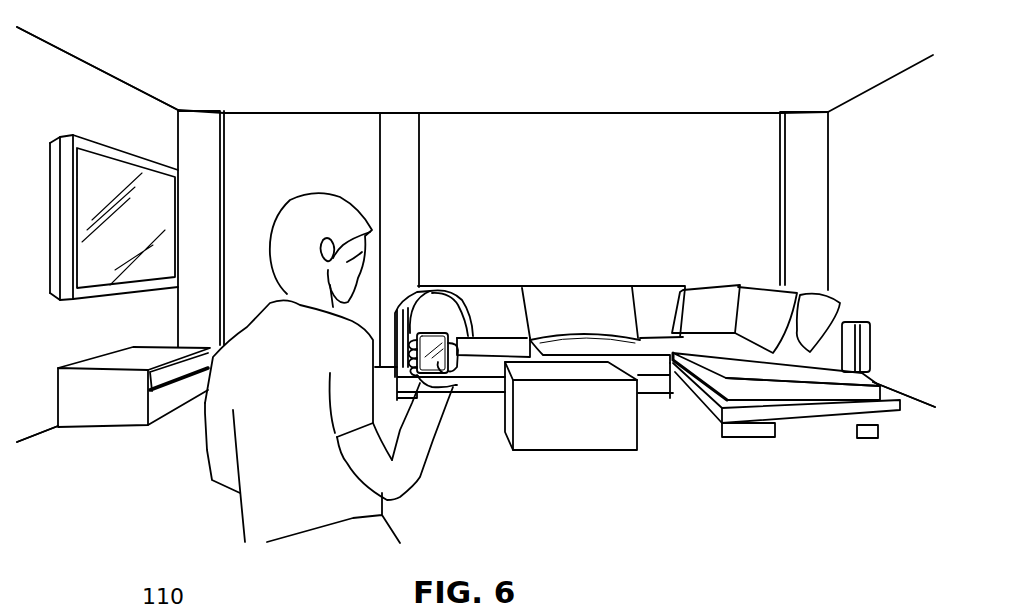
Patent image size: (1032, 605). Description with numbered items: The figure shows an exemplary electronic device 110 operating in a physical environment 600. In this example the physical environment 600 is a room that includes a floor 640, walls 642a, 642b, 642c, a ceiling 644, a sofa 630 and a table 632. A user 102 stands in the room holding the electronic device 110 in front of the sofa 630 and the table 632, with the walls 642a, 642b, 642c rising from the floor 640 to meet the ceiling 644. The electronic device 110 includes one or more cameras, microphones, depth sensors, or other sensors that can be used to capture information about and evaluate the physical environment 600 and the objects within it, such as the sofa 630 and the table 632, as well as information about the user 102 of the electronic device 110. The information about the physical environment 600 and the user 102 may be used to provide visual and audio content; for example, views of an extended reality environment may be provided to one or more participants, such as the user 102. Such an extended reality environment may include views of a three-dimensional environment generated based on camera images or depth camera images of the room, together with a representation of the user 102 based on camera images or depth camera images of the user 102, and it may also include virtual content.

The physical environment 600 is at (190, 72).
The user 102 is at (263, 513).
The electronic device 110 is at (457, 386).
The sofa 630 is at (851, 333).
The table 632 is at (627, 433).
The floor 640 is at (555, 504).
The wall 642a is at (151, 129).
The wall 642b is at (602, 220).
The wall 642c is at (910, 163).
The ceiling 644 is at (632, 94).